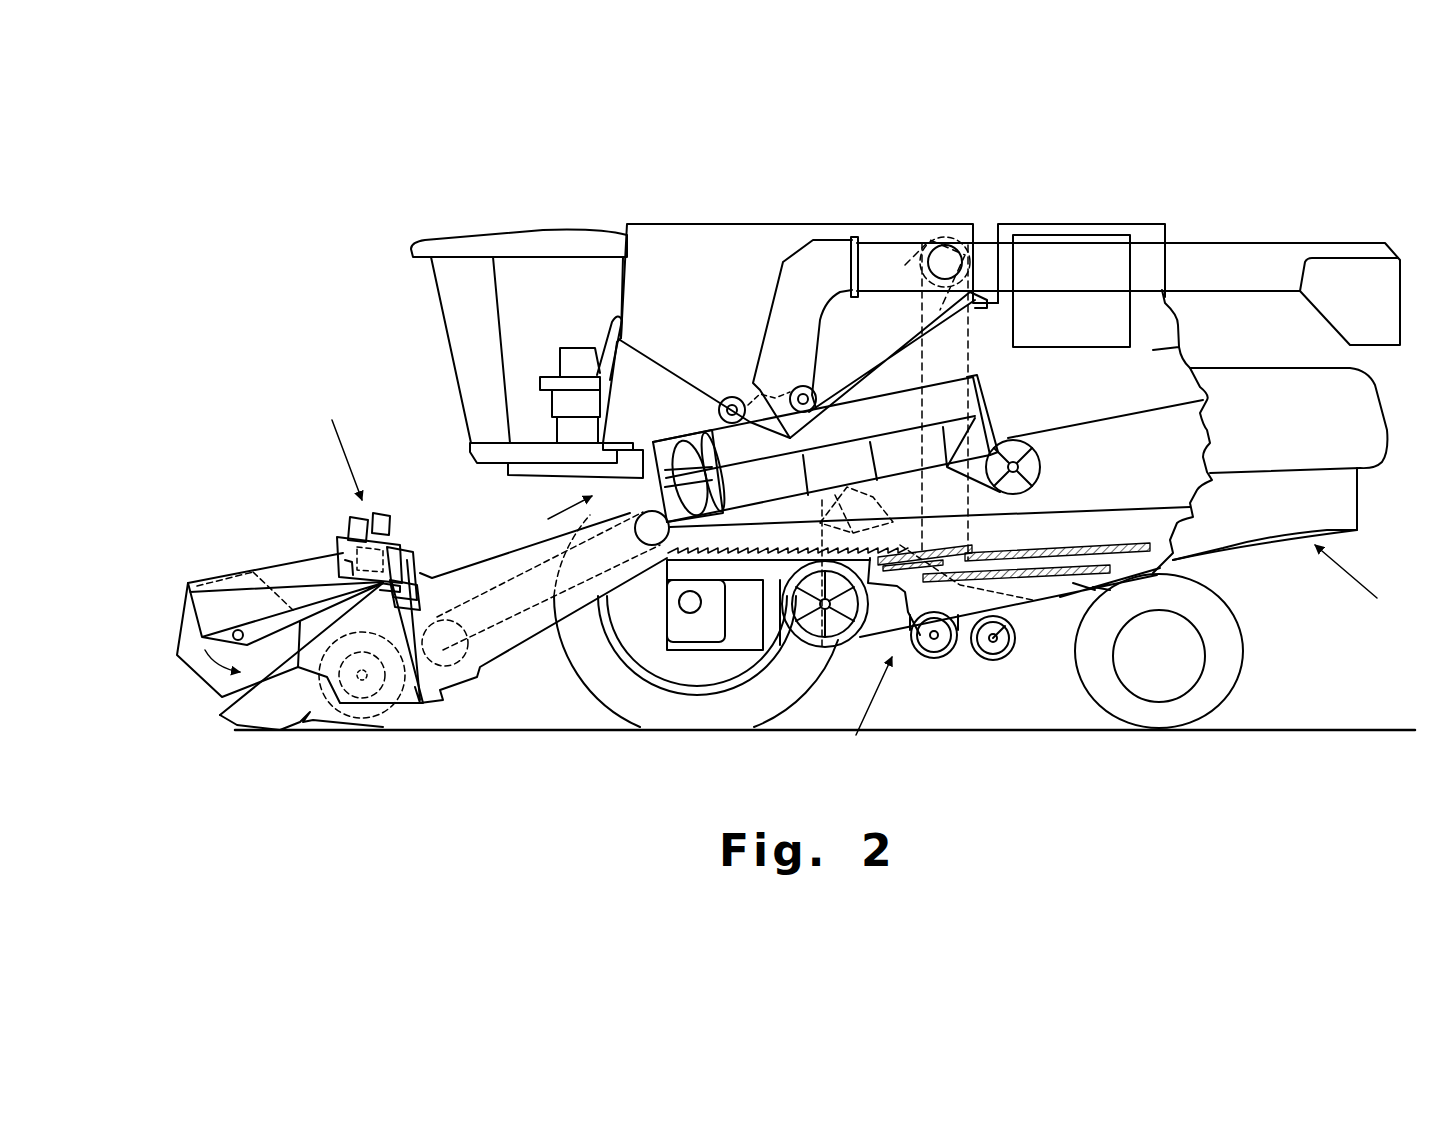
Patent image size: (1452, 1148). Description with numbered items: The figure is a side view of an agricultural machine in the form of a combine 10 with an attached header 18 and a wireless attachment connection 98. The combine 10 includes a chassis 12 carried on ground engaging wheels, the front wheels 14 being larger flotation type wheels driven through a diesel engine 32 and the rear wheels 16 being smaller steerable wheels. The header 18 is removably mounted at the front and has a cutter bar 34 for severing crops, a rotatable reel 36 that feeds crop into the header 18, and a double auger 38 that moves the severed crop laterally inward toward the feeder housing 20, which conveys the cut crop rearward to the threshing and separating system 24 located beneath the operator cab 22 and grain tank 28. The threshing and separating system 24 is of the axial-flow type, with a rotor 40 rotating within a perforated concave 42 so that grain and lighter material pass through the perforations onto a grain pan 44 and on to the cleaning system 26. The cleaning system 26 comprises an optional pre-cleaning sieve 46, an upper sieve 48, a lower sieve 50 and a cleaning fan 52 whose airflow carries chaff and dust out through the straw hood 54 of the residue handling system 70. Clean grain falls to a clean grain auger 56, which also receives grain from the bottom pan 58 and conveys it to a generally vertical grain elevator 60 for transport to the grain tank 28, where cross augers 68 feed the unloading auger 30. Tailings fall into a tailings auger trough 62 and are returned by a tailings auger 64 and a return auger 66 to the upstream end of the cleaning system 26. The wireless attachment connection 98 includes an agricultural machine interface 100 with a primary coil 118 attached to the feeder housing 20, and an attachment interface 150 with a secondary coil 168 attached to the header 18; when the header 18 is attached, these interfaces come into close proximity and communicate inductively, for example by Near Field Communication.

The combine 10 is at (510, 207).
The chassis 12 is at (1167, 567).
The front wheels 14 is at (590, 683).
The rear wheels 16 is at (1238, 670).
The header 18 is at (260, 553).
The feeder housing 20 is at (500, 550).
The operator cab 22 is at (440, 328).
The threshing and separating system 24 is at (553, 514).
The cleaning system 26 is at (865, 714).
The grain tank 28 is at (683, 232).
The unloading auger 30 is at (1255, 253).
The diesel engine 32 is at (1060, 240).
The cutter bar 34 is at (300, 715).
The rotatable reel 36 is at (187, 620).
The double auger 38 is at (367, 690).
The rotor 40 is at (680, 450).
The perforated concave 42 is at (865, 428).
The grain pan 44 is at (667, 590).
The pre-cleaning sieve 46 is at (975, 553).
The upper sieve 48 is at (1075, 553).
The lower sieve 50 is at (1040, 577).
The cleaning fan 52 is at (828, 640).
The straw hood 54 is at (1365, 408).
The clean grain auger 56 is at (938, 648).
The bottom pan 58 is at (1073, 583).
The grain elevator 60 is at (980, 355).
The tailings auger trough 62 is at (1093, 587).
The tailings auger 64 is at (992, 652).
The return auger 66 is at (913, 533).
The cross augers 68 is at (732, 397).
The residue handling system 70 is at (1361, 581).
The wireless attachment connection 98 is at (338, 447).
The agricultural machine interface 100 is at (384, 513).
The agricultural machine primary coil 118 is at (410, 545).
The attachment interface 150 is at (352, 525).
The attachment secondary coil 168 is at (348, 548).